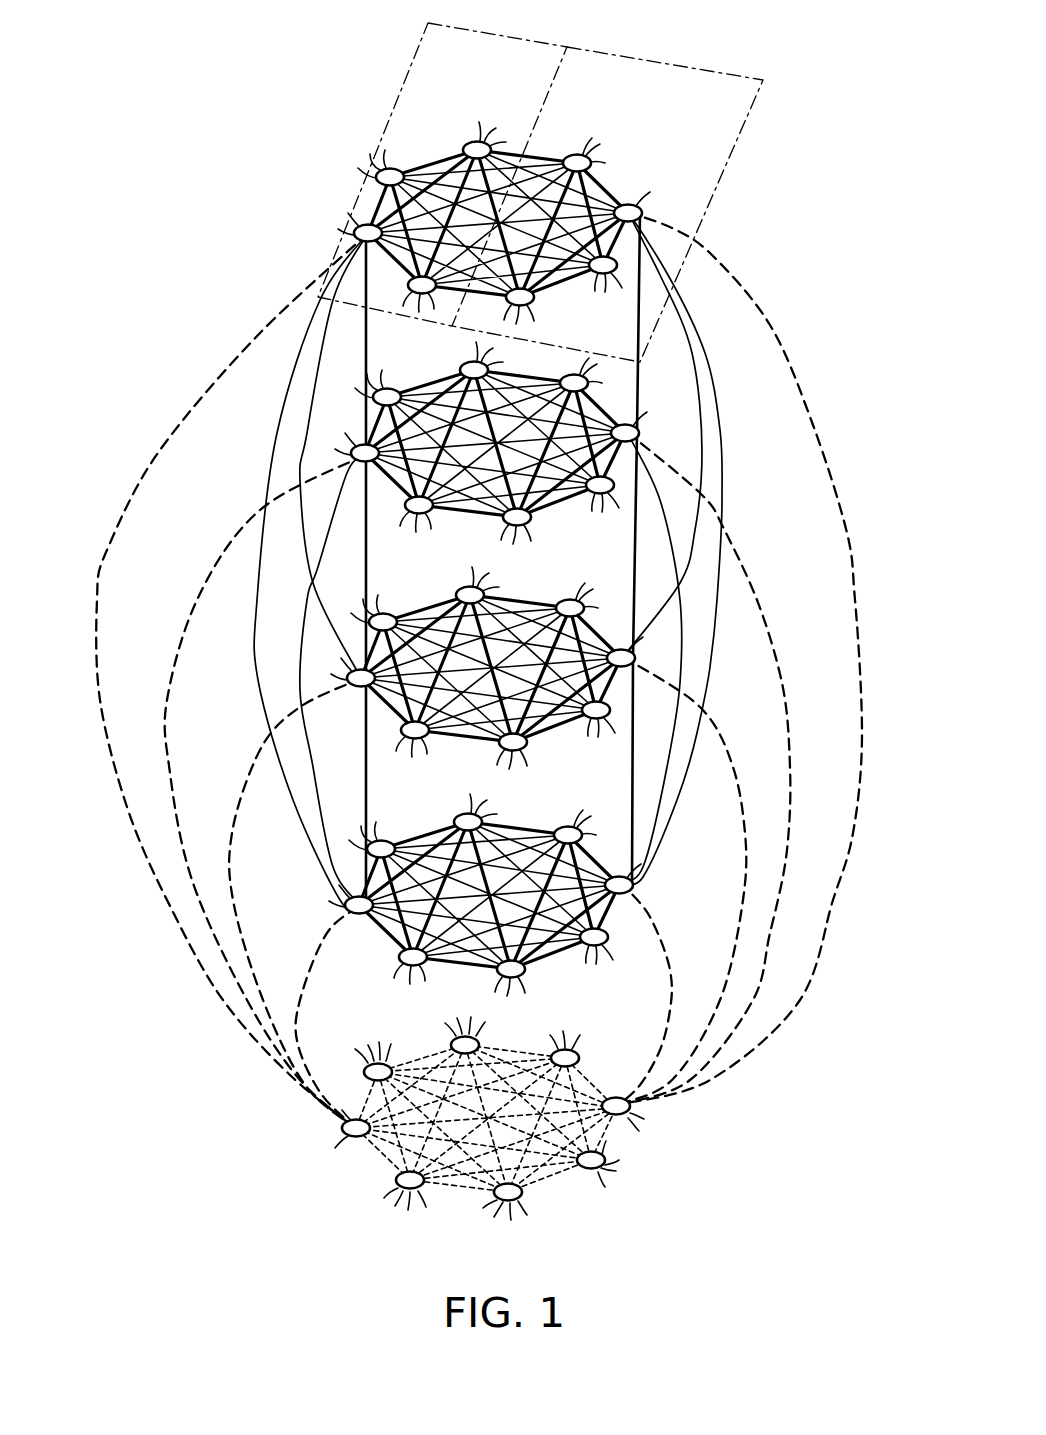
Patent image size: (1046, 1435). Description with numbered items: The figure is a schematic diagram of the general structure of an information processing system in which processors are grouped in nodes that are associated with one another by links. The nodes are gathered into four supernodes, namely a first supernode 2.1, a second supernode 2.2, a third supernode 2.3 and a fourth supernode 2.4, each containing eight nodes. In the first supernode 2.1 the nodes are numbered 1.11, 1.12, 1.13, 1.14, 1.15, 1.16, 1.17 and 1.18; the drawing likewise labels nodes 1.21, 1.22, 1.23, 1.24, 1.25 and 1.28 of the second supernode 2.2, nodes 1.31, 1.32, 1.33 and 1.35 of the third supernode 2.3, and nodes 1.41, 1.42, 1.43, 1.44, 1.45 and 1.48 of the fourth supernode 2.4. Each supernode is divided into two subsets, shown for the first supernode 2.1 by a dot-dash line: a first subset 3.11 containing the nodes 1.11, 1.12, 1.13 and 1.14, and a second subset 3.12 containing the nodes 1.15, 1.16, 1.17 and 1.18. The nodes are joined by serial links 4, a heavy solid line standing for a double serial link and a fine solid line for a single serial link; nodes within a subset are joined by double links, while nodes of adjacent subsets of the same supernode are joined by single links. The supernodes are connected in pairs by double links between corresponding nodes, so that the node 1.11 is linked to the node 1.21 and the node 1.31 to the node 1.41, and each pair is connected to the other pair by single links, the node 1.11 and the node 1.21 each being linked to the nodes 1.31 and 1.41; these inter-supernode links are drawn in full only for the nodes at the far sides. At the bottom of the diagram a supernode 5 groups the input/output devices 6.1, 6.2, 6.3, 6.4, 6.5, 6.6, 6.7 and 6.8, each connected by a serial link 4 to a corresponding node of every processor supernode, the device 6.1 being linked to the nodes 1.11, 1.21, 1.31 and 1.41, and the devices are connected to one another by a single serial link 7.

The first node of the first supernode 1.11 is at (352, 222).
The second node of the first supernode 1.12 is at (384, 165).
The third node of the first supernode 1.13 is at (472, 141).
The fourth node of the first supernode 1.14 is at (426, 295).
The fifth node of the first supernode 1.15 is at (592, 152).
The sixth node of the first supernode 1.16 is at (640, 205).
The seventh node of the first supernode 1.17 is at (606, 276).
The eighth node of the first supernode 1.18 is at (531, 298).
The first node of the second supernode 1.21 is at (360, 446).
The second node of the second supernode 1.22 is at (386, 389).
The third node of the second supernode 1.23 is at (481, 364).
The fourth node of the second supernode 1.24 is at (426, 513).
The fifth node of the second supernode 1.25 is at (579, 378).
The eighth node of the second supernode 1.28 is at (531, 520).
The first node of the third supernode 1.31 is at (357, 690).
The second node of the third supernode 1.32 is at (387, 612).
The third node of the third supernode 1.33 is at (482, 587).
The fifth node of the third supernode 1.35 is at (575, 600).
The first node of the fourth supernode 1.41 is at (358, 916).
The second node of the fourth supernode 1.42 is at (380, 838).
The third node of the fourth supernode 1.43 is at (479, 810).
The fourth node of the fourth supernode 1.44 is at (418, 967).
The fifth node of the fourth supernode 1.45 is at (579, 826).
The eighth node of the fourth supernode 1.48 is at (523, 977).
The first supernode 2.1 is at (212, 170).
The second supernode 2.2 is at (227, 396).
The third supernode 2.3 is at (232, 620).
The fourth supernode 2.4 is at (300, 852).
The first subset of the supernode 3.11 is at (478, 29).
The second subset of the supernode 3.12 is at (620, 52).
The serial link 4 is at (428, 162).
The supernode of input/output devices 5 is at (278, 1085).
The input/output device 6.1 is at (351, 1138).
The input/output device 6.2 is at (386, 1062).
The input/output device 6.3 is at (479, 1040).
The input/output device 6.4 is at (410, 1190).
The input/output device 6.5 is at (580, 1053).
The input/output device 6.6 is at (626, 1116).
The input/output device 6.7 is at (594, 1170).
The input/output device 6.8 is at (516, 1202).
The single serial link 7 is at (395, 1188).